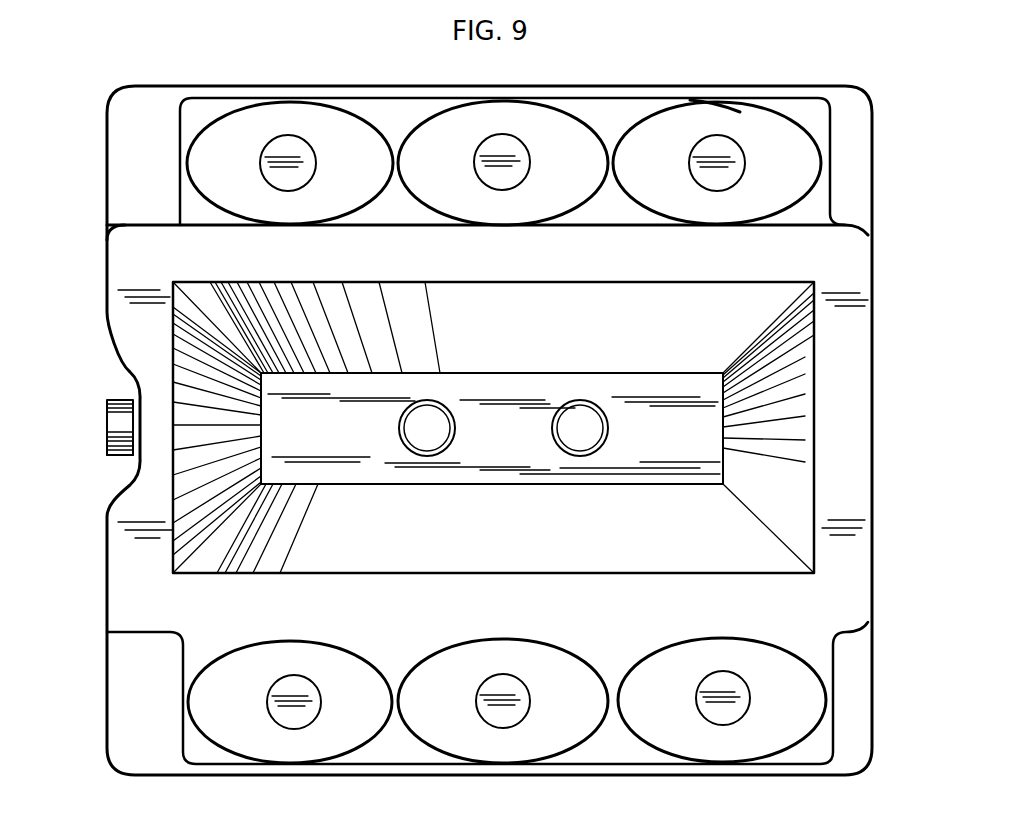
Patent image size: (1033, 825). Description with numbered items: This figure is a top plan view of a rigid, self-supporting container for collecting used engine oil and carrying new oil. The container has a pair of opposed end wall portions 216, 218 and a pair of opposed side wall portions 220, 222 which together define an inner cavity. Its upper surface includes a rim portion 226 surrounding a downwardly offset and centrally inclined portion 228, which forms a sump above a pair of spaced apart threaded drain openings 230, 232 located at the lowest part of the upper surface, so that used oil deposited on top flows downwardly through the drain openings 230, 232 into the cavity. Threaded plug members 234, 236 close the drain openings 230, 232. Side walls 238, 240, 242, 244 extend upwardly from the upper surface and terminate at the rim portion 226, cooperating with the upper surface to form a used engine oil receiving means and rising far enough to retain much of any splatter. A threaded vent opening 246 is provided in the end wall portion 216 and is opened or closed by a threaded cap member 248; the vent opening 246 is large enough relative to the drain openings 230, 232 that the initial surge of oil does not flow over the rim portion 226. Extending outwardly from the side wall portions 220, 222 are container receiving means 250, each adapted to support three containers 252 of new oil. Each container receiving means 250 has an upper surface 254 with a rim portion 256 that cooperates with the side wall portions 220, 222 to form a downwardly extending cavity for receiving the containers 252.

The end wall portion 216 is at (107, 272).
The end wall portion 218 is at (872, 357).
The side wall portion 220 is at (205, 228).
The side wall portion 222 is at (245, 640).
The rim portion 226 is at (857, 245).
The downwardly offset and centrally inclined portion 228 is at (662, 550).
The threaded drain opening 230 is at (455, 428).
The threaded drain opening 232 is at (608, 432).
The threaded plug member 234 is at (412, 426).
The threaded plug member 236 is at (572, 433).
The side wall 238 is at (805, 482).
The side wall 240 is at (627, 317).
The side wall 242 is at (185, 345).
The side wall 244 is at (492, 533).
The threaded vent opening 246 is at (135, 398).
The threaded cap member 248 is at (115, 460).
The container receiving means 250 is at (212, 104).
The container 252 is at (365, 194).
The upper surface 254 is at (627, 218).
The rim portion 256 is at (700, 97).